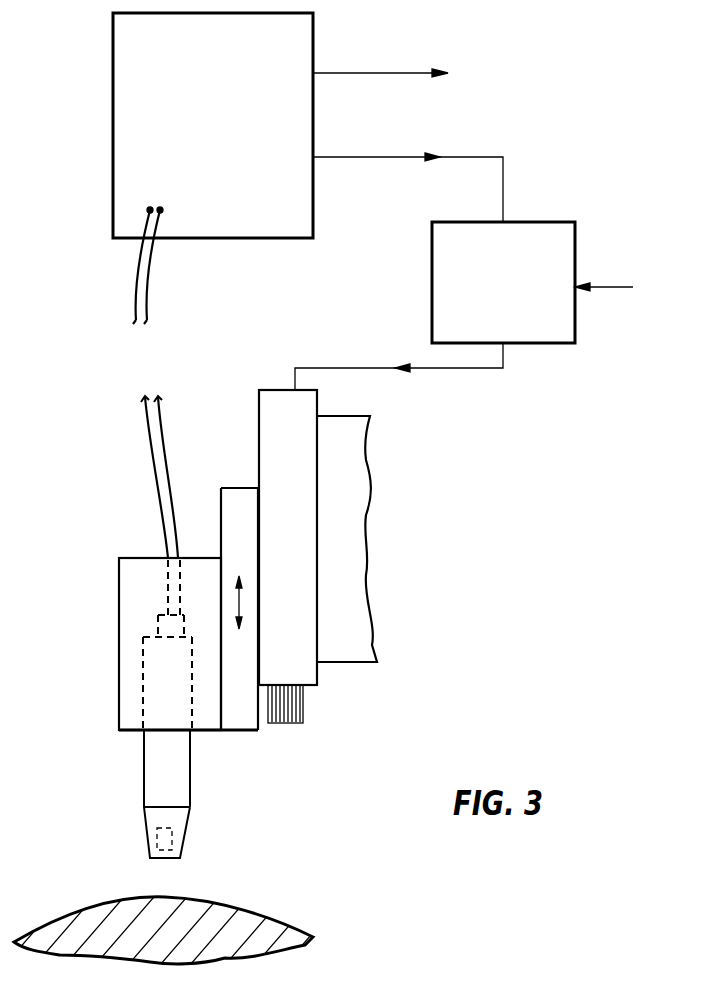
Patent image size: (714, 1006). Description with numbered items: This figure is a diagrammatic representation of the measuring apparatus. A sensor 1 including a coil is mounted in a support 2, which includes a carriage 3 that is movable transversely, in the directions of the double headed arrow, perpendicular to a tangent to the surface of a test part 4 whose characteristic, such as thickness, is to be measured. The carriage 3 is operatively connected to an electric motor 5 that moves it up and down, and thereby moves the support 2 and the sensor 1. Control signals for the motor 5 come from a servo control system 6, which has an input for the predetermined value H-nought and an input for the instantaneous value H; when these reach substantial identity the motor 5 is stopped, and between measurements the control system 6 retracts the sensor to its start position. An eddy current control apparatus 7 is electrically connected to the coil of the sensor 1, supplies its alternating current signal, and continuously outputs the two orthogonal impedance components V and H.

The sensor 1 is at (143, 832).
The support 2 is at (131, 567).
The carriage 3 is at (243, 720).
The test part 4 is at (243, 923).
The motor 5 is at (353, 628).
The control system 6 is at (432, 279).
The control apparatus 7 is at (215, 225).